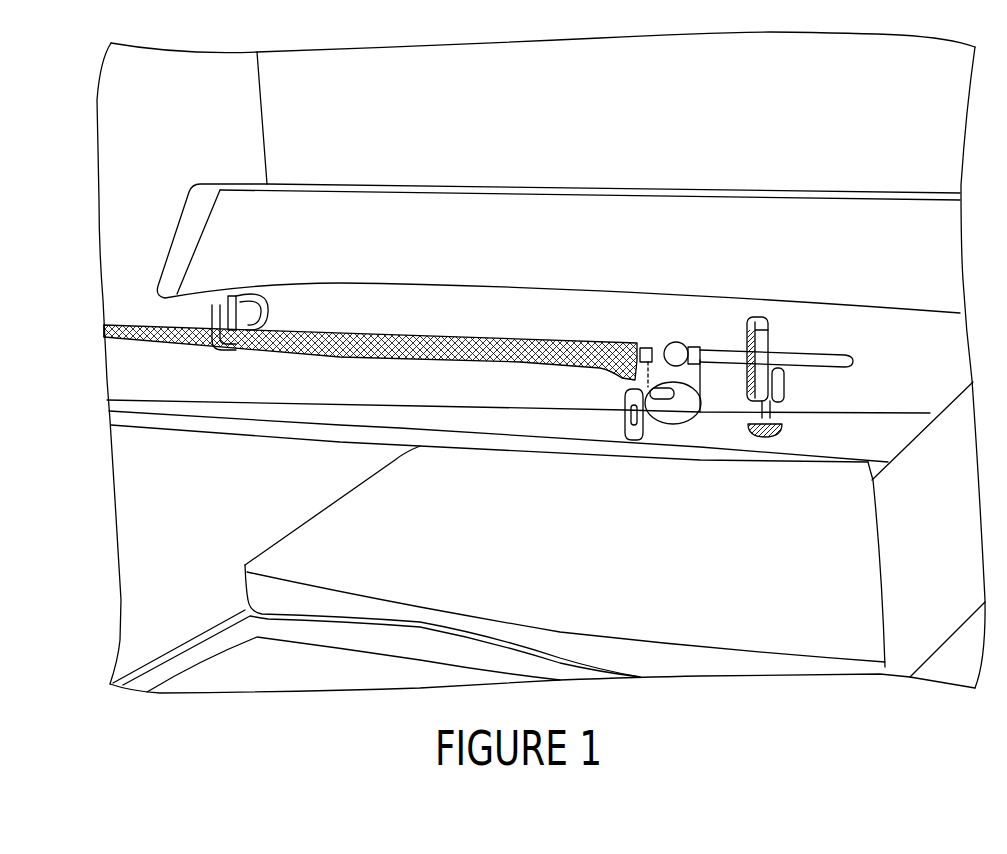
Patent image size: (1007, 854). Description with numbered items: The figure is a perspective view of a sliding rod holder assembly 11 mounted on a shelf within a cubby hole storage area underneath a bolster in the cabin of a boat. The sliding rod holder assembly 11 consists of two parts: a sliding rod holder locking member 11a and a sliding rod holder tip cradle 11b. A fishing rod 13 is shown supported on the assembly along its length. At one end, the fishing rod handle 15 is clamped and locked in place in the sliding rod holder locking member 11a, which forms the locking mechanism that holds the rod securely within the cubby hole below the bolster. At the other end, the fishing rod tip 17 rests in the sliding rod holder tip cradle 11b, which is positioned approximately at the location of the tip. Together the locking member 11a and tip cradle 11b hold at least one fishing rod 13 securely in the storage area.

The sliding rod holder assembly 11 is at (803, 158).
The sliding rod holder locking member 11a is at (762, 343).
The sliding rod holder tip cradle 11b is at (241, 303).
The fishing rod 13 is at (553, 352).
The fishing rod handle 15 is at (850, 357).
The fishing rod tip 17 is at (103, 328).